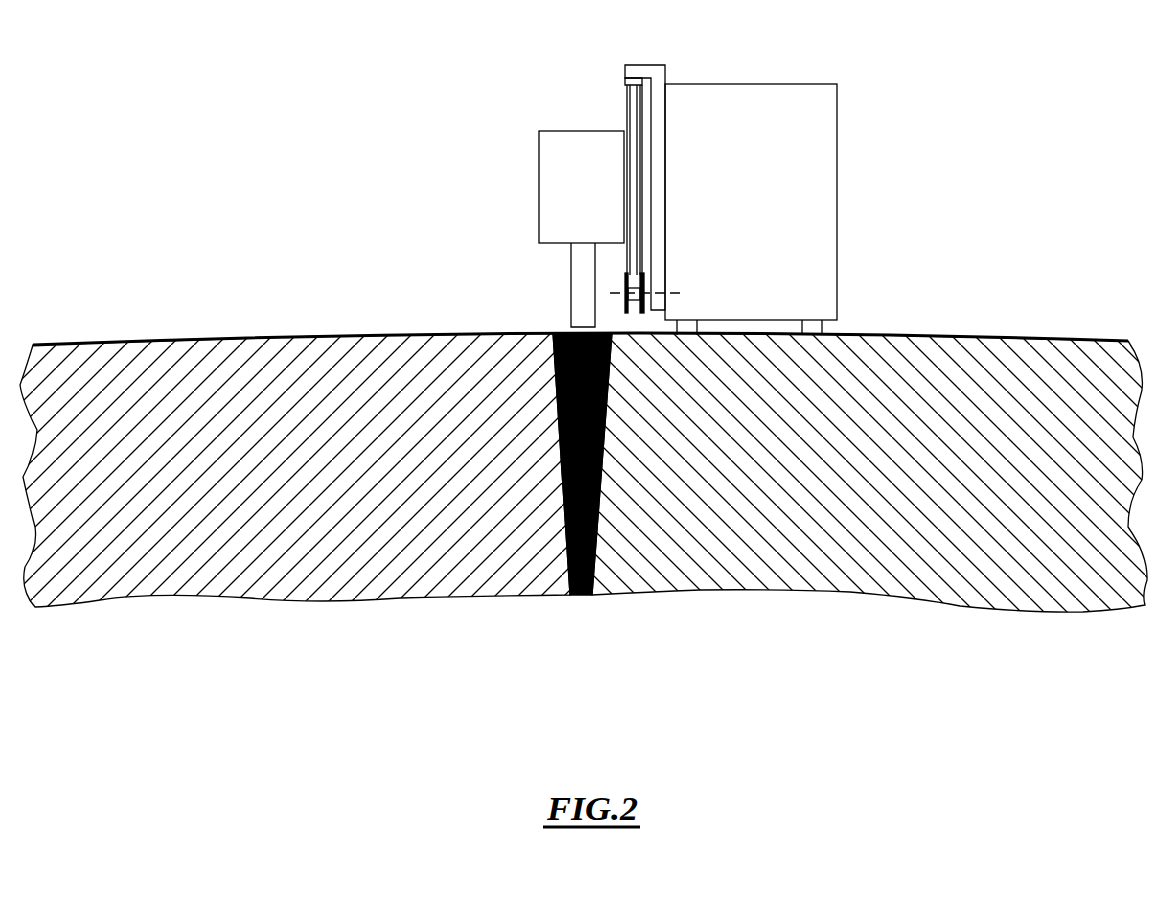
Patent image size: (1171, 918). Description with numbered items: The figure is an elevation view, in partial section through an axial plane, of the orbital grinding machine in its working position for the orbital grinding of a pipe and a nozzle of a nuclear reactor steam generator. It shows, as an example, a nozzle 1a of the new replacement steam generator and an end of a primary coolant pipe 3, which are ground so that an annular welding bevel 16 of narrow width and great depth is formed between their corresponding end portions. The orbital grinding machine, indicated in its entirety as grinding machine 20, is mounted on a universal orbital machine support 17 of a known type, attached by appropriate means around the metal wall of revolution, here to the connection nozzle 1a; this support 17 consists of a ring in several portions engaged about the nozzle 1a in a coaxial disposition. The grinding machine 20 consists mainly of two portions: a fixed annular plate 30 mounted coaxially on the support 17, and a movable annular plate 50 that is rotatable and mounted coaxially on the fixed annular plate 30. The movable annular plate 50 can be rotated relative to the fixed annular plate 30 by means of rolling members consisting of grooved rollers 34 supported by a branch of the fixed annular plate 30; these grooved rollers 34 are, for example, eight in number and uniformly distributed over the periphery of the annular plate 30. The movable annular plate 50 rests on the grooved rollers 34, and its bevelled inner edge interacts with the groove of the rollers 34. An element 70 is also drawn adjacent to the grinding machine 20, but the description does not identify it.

The primary coolant pipe 3 is at (287, 377).
The nozzle 1a is at (930, 352).
The annular welding bevel 16 is at (607, 467).
The universal orbital machine support 17 is at (850, 77).
The orbital grinding machine 20 is at (535, 122).
The fixed annular plate 30 is at (677, 57).
The grooved rollers 34 is at (633, 300).
The movable annular plate 50 is at (618, 98).
The sensor probe 70 is at (558, 301).